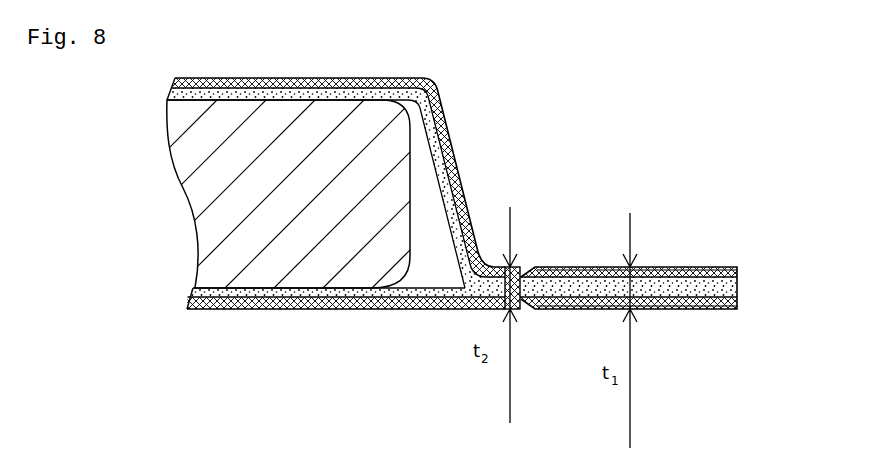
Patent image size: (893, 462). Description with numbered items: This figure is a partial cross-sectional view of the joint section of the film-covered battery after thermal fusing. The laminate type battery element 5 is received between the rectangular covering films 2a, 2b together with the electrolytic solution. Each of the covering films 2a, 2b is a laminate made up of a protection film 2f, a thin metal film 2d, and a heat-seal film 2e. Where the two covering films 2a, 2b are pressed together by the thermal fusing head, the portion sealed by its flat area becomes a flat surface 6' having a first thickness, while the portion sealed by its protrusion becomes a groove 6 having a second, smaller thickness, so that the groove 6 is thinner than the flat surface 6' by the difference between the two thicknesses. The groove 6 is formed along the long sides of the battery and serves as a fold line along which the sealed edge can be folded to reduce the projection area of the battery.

The battery element 5 is at (232, 201).
The covering film 2a is at (447, 123).
The covering film 2b is at (410, 312).
The groove 6 is at (546, 311).
The flat surface 6' is at (629, 224).
The thin metal film 2d is at (737, 272).
The heat-seal film 2e is at (735, 287).
The protection film 2f is at (733, 266).